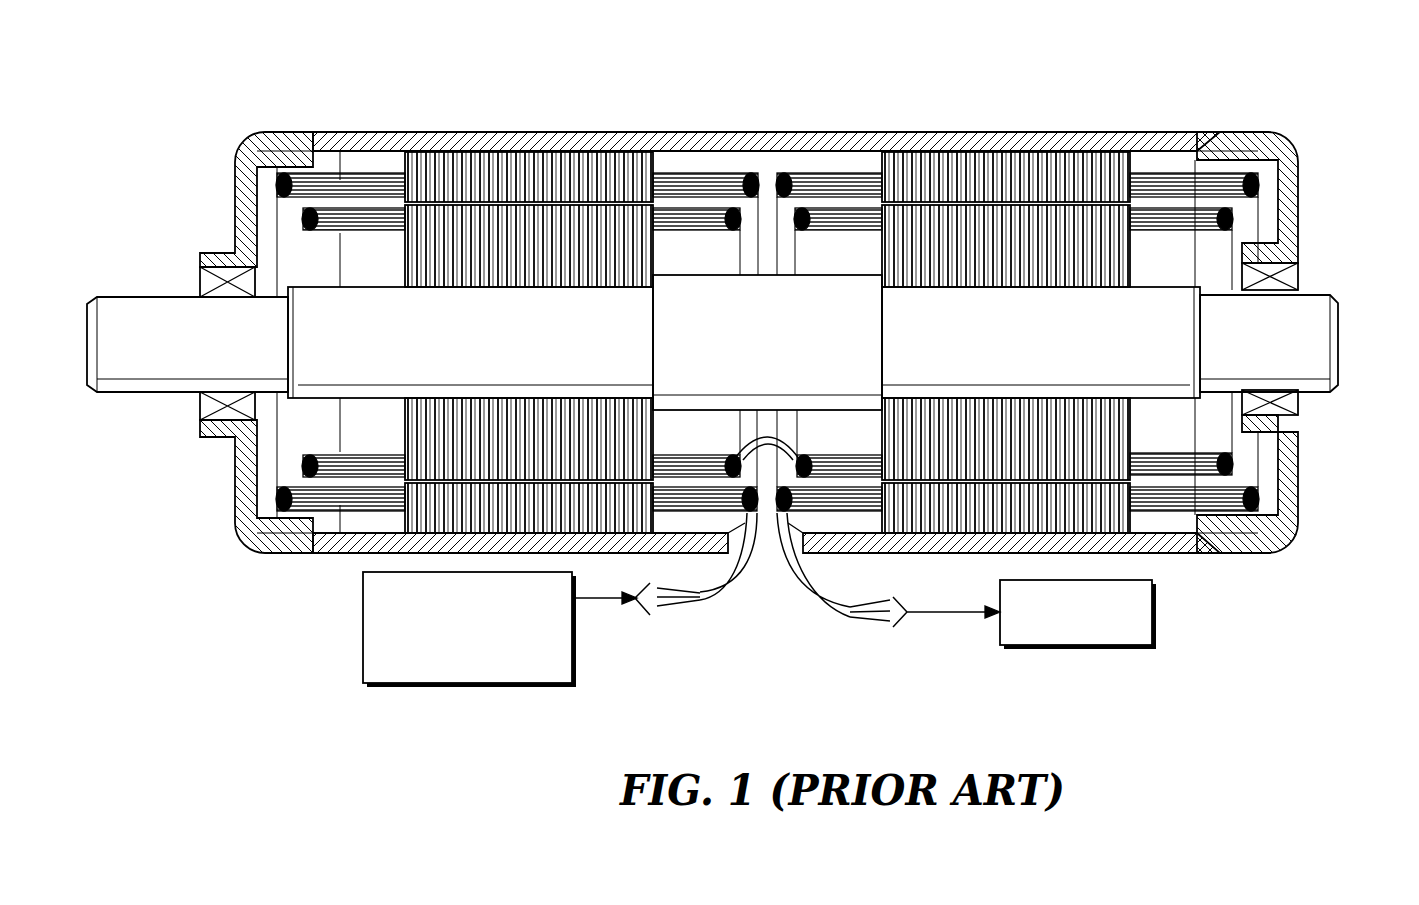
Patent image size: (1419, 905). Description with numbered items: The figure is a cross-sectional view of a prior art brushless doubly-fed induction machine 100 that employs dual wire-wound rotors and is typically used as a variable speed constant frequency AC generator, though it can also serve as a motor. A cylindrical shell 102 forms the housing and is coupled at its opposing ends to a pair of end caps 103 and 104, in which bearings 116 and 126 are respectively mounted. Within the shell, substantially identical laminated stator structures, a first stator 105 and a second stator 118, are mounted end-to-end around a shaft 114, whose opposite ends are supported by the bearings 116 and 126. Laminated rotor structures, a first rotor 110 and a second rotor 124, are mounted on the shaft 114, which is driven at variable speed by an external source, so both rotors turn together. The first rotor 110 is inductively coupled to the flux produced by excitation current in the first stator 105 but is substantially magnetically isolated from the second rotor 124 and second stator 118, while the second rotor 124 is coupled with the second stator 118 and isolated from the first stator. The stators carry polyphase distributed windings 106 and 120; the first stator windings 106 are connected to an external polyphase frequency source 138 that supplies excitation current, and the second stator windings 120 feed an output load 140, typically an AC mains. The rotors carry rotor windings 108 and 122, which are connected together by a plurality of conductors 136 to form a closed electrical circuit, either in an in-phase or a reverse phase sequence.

The brushless doubly-fed induction machine 100 is at (658, 100).
The cylindrical shell 102 is at (815, 137).
The end cap 103 is at (282, 138).
The end cap 104 is at (1240, 135).
The first stator 105 is at (590, 157).
The first stator windings 106 is at (280, 183).
The rotor windings 108 is at (303, 217).
The first rotor 110 is at (483, 215).
The shaft 114 is at (185, 297).
The bearing 116 is at (205, 403).
The second stator 118 is at (962, 162).
The second stator windings 120 is at (1262, 183).
The rotor windings 122 is at (1230, 218).
The second rotor 124 is at (1045, 220).
The bearing 126 is at (1290, 403).
The conductors 136 is at (780, 445).
The polyphase frequency source 138 is at (487, 675).
The output load 140 is at (1083, 640).